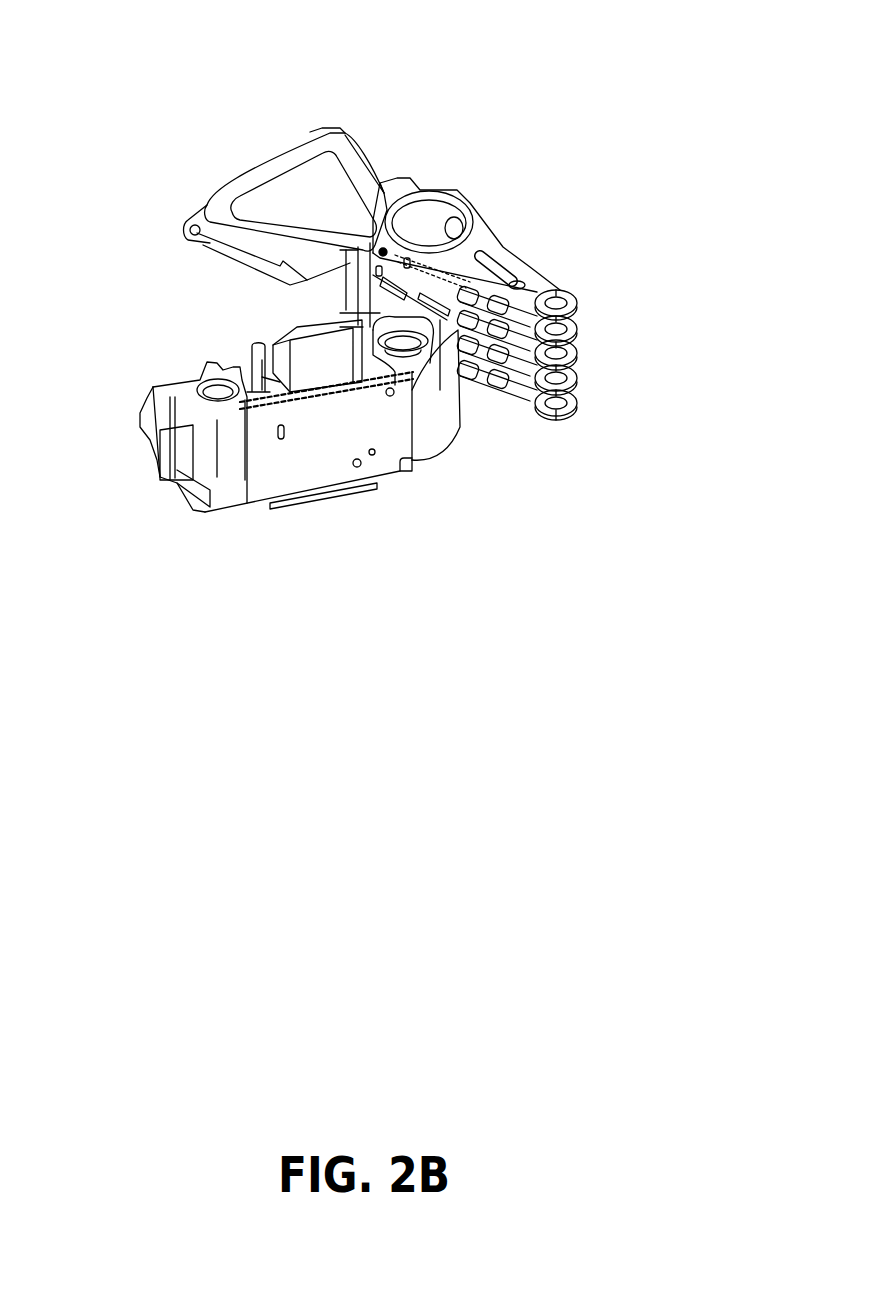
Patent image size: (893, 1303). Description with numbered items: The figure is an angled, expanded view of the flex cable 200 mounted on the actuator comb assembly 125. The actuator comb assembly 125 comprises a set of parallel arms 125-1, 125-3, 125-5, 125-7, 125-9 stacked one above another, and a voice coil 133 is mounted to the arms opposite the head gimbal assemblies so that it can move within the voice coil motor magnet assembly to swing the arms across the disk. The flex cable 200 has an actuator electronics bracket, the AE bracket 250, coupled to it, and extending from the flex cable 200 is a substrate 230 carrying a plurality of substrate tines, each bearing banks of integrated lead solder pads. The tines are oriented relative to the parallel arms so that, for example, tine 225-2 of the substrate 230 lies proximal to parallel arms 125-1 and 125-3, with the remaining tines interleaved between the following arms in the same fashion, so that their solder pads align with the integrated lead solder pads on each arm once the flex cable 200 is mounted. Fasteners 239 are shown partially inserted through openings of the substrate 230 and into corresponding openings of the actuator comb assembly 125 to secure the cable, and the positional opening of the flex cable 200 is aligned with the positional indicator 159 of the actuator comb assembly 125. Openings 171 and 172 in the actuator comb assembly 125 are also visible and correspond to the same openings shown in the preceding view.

The actuator comb assembly 125 is at (556, 291).
The parallel arm 125-1 is at (588, 272).
The parallel arm 125-3 is at (577, 323).
The parallel arm 125-5 is at (577, 348).
The parallel arm 125-7 is at (577, 377).
The parallel arm 125-9 is at (560, 412).
The voice coil 133 is at (285, 167).
The positional indicator 159 is at (384, 250).
The opening 171 is at (438, 218).
The opening 172 is at (556, 420).
The flex cable 200 is at (437, 427).
The substrate tine 225-2 is at (477, 283).
The substrate 230 is at (345, 263).
The fasteners 239 is at (413, 257).
The AE bracket 250 is at (210, 445).